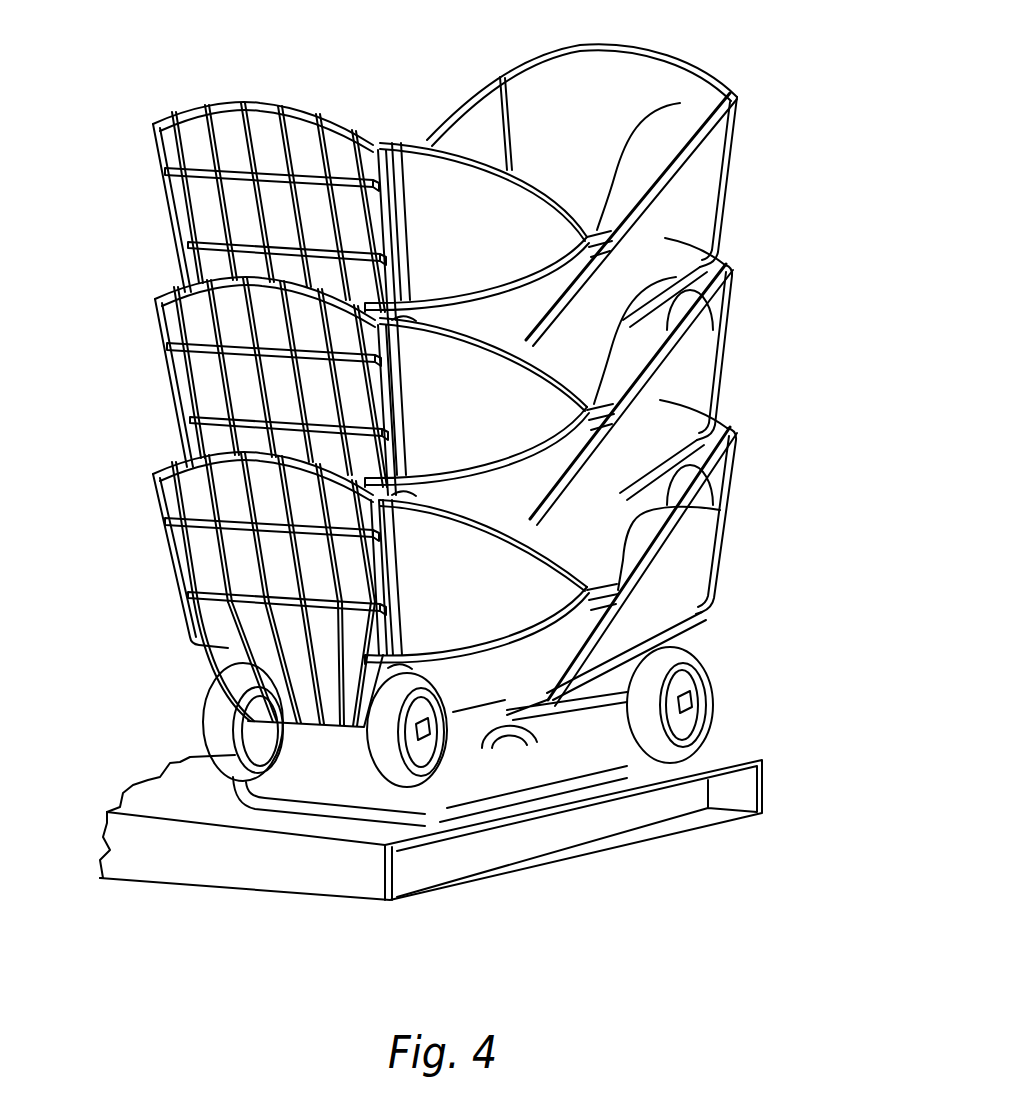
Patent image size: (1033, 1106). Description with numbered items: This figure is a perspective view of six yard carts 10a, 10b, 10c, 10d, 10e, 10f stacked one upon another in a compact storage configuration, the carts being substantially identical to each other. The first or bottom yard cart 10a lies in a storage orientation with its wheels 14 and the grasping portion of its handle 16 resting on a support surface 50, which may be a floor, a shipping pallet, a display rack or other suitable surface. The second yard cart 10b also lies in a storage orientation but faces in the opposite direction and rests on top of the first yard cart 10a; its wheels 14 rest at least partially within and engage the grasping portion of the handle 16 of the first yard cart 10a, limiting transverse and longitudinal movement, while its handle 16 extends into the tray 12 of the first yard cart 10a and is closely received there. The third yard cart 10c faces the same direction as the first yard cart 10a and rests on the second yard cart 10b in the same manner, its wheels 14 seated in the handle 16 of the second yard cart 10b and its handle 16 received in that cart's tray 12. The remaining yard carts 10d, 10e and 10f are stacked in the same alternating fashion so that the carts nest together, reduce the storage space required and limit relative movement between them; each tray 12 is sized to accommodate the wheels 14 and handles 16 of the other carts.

The first yard cart 10a is at (707, 614).
The second yard cart 10b is at (193, 640).
The third yard cart 10c is at (720, 402).
The fourth yard cart 10d is at (186, 441).
The fifth yard cart 10e is at (727, 168).
The sixth yard cart 10f is at (160, 164).
The tray 12 is at (720, 192).
The wheels 14 is at (700, 293).
The handle 16 is at (723, 88).
The support surface 50 is at (381, 893).